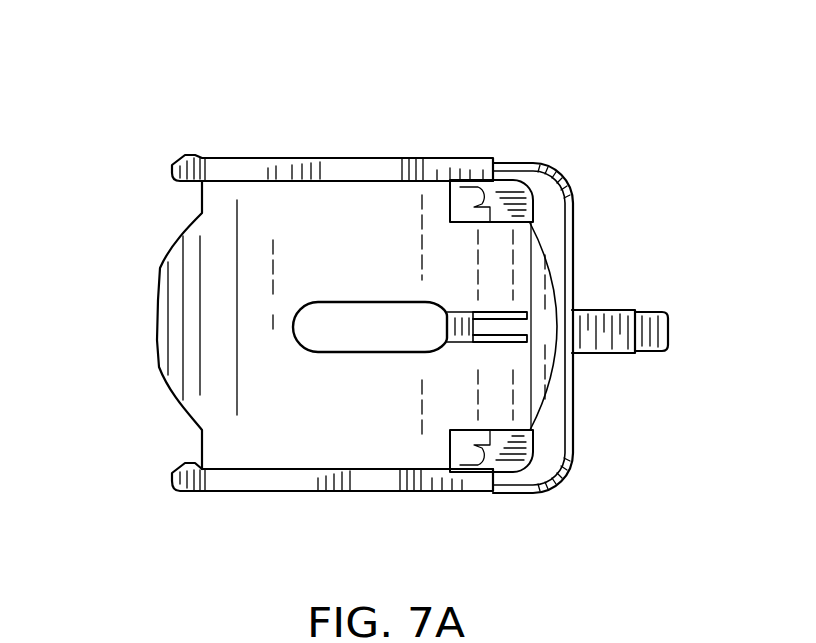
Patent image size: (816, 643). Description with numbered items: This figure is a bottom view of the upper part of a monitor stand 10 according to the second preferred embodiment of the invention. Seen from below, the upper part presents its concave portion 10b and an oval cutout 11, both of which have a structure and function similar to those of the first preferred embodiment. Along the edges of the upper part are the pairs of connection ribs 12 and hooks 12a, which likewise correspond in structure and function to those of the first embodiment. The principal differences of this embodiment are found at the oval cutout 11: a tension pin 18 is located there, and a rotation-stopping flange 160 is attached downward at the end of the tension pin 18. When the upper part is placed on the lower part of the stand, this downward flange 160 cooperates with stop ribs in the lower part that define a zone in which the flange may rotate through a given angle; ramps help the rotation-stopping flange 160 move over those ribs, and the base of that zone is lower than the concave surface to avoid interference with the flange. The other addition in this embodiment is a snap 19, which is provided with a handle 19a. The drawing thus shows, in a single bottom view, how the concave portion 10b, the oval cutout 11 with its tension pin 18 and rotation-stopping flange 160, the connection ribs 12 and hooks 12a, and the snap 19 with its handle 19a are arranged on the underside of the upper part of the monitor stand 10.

The lamp assembly / housing 10 is at (240, 144).
The concave portion 10b is at (250, 322).
The oval cutout 11 is at (367, 327).
The flange 12 is at (172, 166).
The retaining clip 12a is at (475, 196).
The tension pin 18 is at (490, 326).
The snap 19 is at (606, 354).
The handle 19a is at (668, 330).
The rotation-stopping flange 160 is at (456, 342).